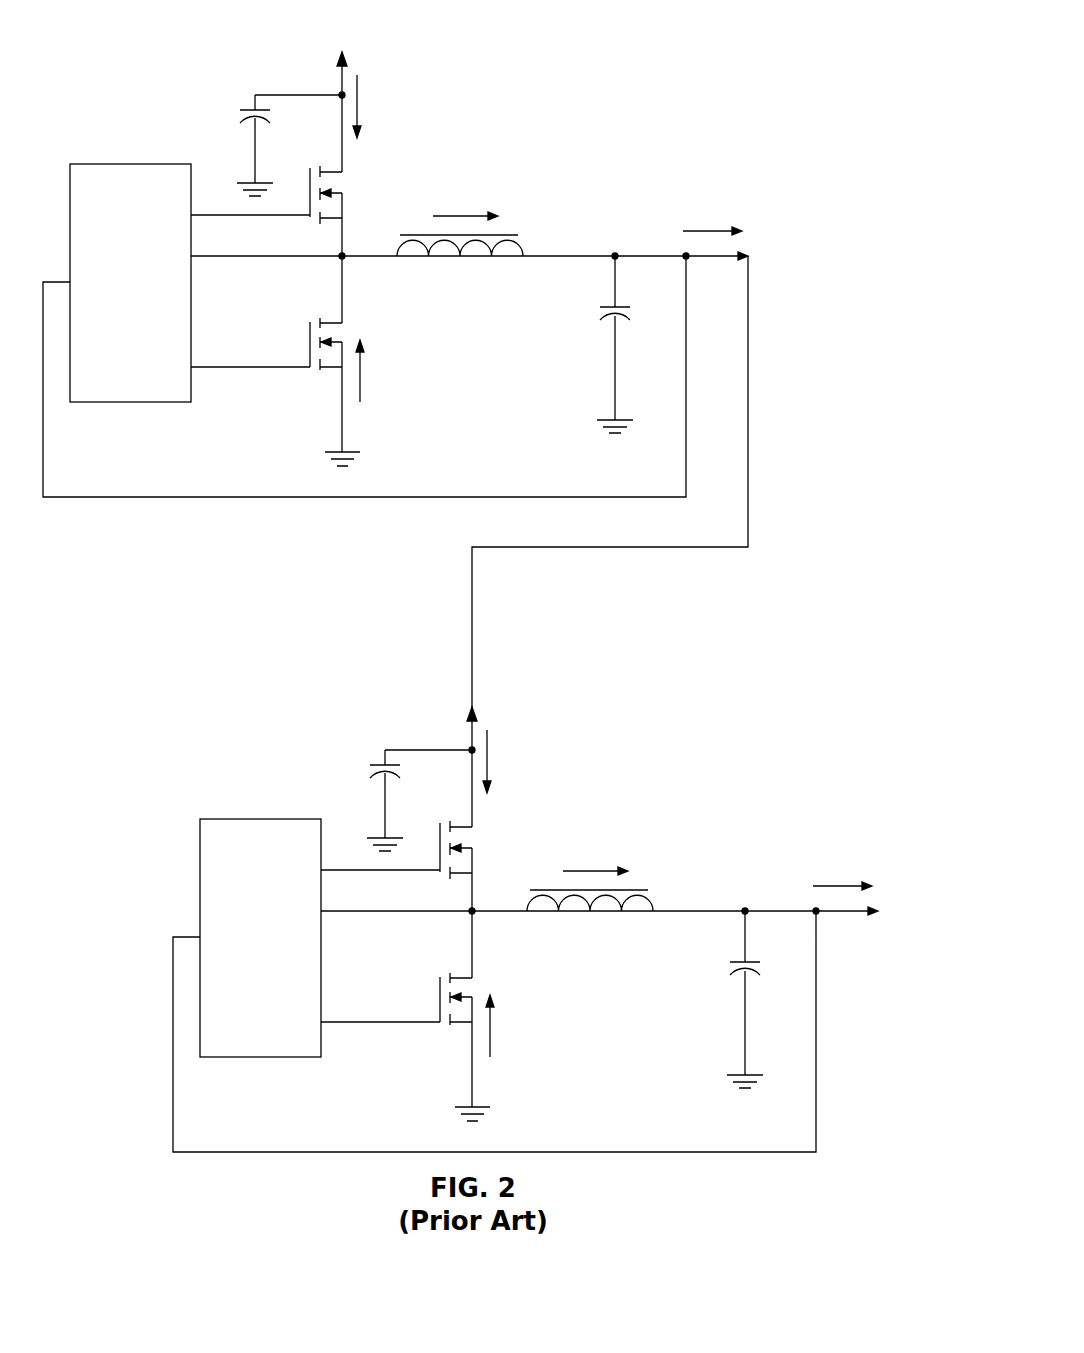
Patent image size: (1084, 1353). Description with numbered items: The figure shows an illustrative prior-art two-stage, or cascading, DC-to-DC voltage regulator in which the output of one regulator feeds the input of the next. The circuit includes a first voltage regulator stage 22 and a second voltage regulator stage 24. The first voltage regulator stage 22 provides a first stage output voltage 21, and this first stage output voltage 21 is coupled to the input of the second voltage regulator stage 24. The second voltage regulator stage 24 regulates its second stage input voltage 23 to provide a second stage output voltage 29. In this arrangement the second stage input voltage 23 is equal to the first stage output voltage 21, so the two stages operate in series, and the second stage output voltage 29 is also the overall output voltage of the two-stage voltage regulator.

The first stage output voltage 21 is at (748, 253).
The first voltage regulator stage 22 is at (614, 146).
The second stage input voltage 23 is at (471, 693).
The second voltage regulator stage 24 is at (747, 803).
The second stage output voltage 29 is at (878, 908).